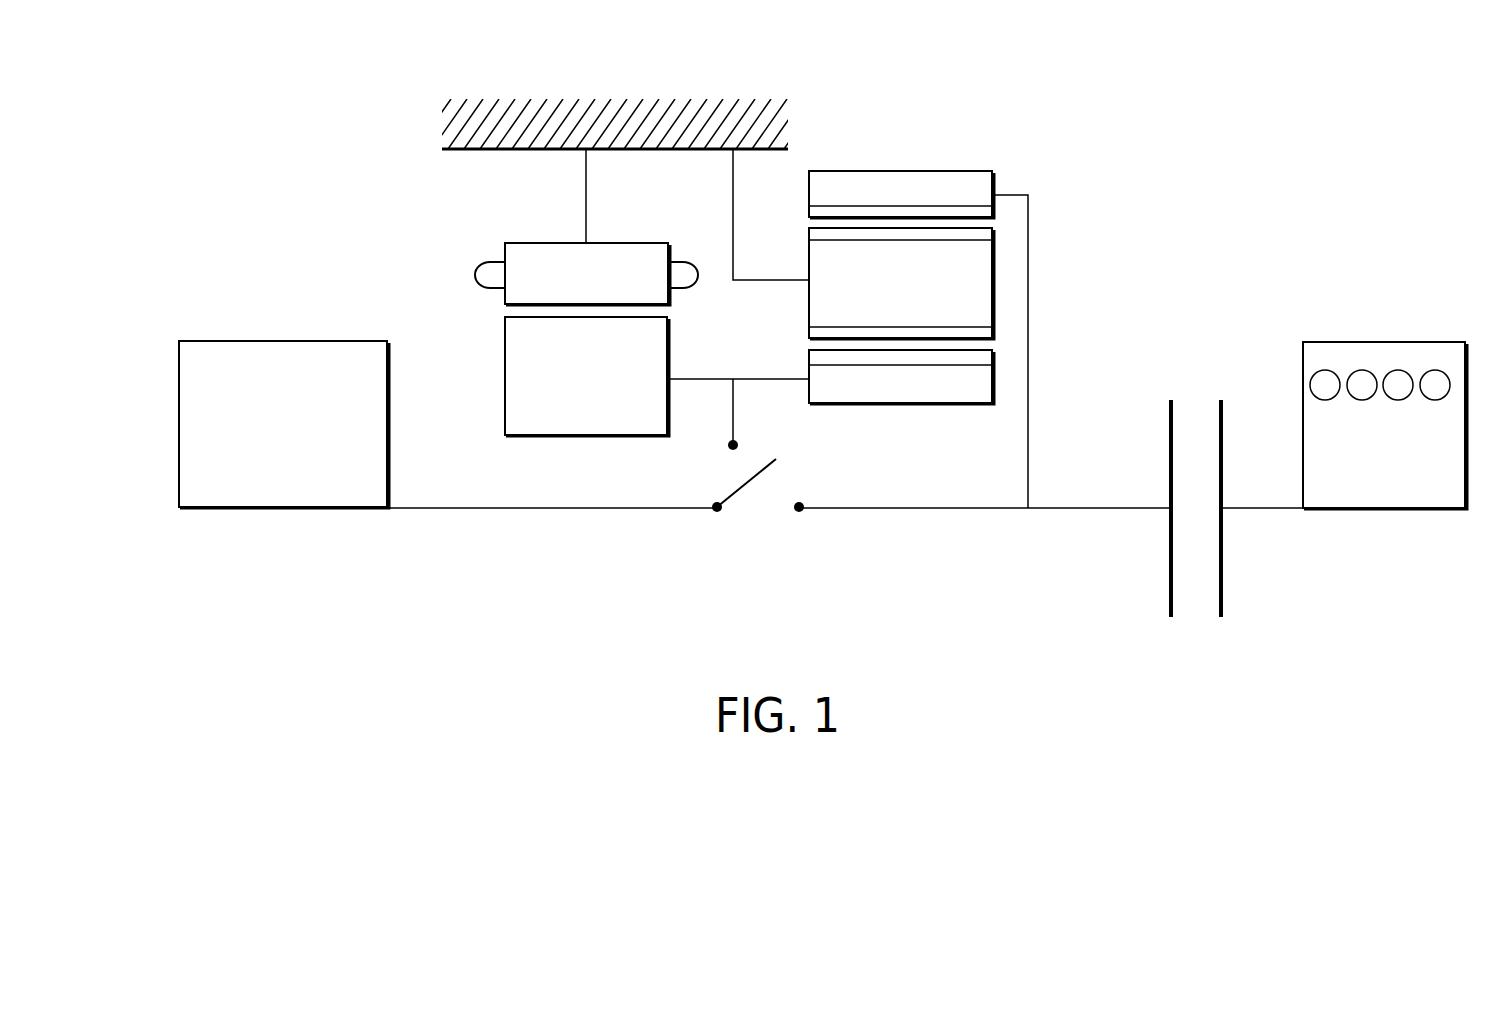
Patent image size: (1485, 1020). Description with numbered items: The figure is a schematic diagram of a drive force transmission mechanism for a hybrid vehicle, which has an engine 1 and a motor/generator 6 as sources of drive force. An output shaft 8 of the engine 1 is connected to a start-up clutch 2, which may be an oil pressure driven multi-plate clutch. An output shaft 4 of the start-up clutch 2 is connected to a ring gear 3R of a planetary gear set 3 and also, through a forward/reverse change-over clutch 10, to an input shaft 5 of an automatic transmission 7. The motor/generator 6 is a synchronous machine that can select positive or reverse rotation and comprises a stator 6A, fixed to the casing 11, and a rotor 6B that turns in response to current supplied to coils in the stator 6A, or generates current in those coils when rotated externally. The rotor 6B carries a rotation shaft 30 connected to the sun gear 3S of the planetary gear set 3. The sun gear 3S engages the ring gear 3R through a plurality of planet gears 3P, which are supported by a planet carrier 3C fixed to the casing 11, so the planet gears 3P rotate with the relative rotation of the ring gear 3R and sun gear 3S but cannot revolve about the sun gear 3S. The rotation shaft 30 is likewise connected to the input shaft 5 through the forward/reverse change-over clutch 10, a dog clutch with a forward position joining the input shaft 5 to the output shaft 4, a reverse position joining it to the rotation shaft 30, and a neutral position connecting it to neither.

The engine 1 is at (1399, 341).
The start-up clutch 2 is at (1224, 407).
The planetary gear set 3 is at (918, 292).
The ring gear 3R is at (901, 194).
The planet gears 3P is at (901, 283).
The sun gear 3S is at (901, 377).
The planet carrier 3C is at (761, 280).
The output shaft 4 is at (1071, 510).
The input shaft 5 is at (508, 510).
The motor/generator 6 is at (472, 232).
The stator 6A is at (472, 272).
The rotor 6B is at (505, 357).
The automatic transmission 7 is at (306, 341).
The output shaft 8 is at (1268, 510).
The forward/reverse change-over clutch 10 is at (750, 516).
The casing 11 is at (507, 151).
The rotation shaft 30 is at (702, 378).